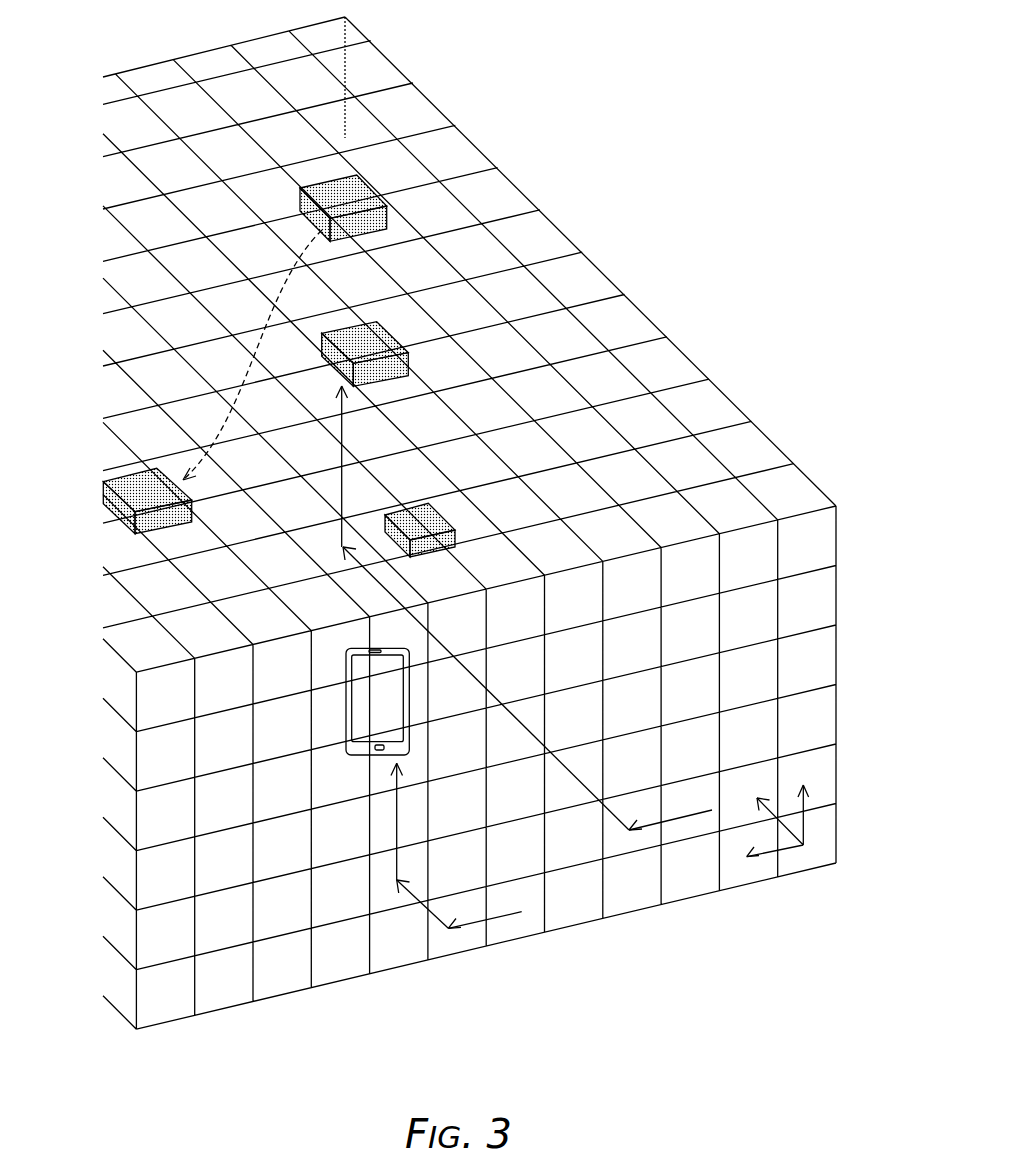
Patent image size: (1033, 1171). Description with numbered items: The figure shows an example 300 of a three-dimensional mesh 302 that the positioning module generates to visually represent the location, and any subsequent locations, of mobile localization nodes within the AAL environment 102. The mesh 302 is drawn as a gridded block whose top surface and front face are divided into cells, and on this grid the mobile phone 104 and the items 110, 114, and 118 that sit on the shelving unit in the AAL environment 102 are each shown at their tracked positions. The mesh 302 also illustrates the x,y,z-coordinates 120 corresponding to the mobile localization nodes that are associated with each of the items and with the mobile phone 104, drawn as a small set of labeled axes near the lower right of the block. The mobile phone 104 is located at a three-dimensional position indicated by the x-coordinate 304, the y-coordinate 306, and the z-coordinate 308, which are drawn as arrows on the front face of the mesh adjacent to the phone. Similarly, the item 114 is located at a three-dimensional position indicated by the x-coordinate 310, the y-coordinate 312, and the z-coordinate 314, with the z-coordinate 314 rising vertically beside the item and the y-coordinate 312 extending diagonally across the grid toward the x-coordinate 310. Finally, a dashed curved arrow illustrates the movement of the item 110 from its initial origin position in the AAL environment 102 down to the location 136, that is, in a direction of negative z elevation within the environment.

The example 300 is at (609, 84).
The three-dimensional (3D) mesh 302 is at (601, 268).
The AAL environment 102 is at (665, 368).
The item 110 is at (292, 199).
The item 114 is at (452, 369).
The item 118 is at (444, 578).
The location 136 is at (206, 546).
The mobile phone 104 is at (364, 783).
The y-coordinate 312 is at (345, 605).
The z-coordinate 314 is at (382, 434).
The x-coordinate 310 is at (702, 814).
The y-coordinate 306 is at (426, 930).
The z-coordinate 308 is at (472, 759).
The x-coordinate 304 is at (527, 908).
The x,y,z-coordinates 120 is at (826, 900).